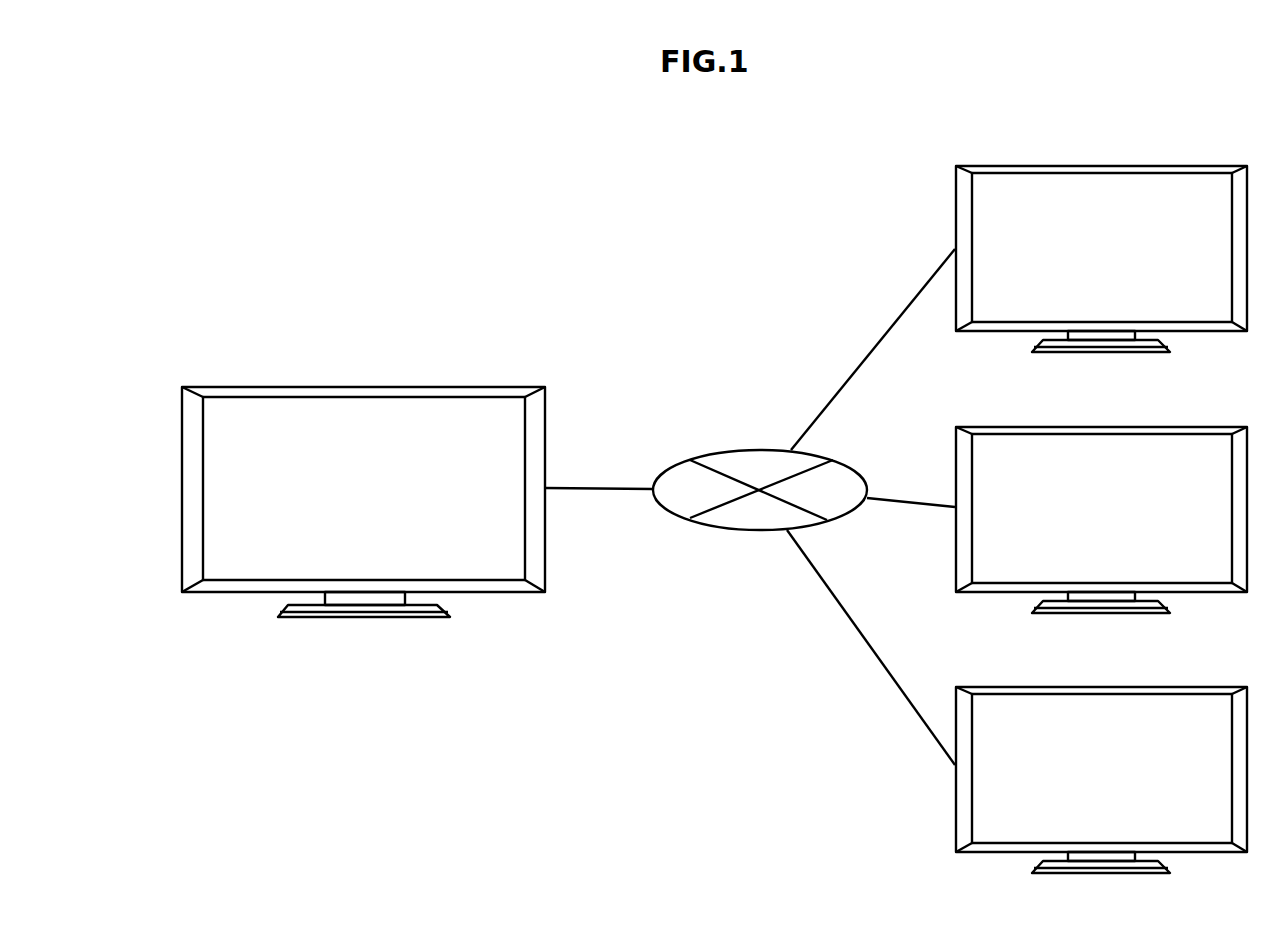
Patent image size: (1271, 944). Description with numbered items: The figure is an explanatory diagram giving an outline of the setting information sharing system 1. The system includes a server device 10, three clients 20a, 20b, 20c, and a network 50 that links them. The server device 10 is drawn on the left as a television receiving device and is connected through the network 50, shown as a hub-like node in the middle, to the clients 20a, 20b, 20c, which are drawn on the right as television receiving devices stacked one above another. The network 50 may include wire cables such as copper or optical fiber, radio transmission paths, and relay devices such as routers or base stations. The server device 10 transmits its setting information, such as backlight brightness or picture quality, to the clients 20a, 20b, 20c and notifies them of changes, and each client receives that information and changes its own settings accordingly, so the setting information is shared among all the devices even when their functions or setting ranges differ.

The setting information sharing system 1 is at (677, 190).
The server device 10 is at (440, 387).
The network 50 is at (737, 450).
The client 20a is at (1197, 166).
The client 20b is at (1197, 427).
The client 20c is at (1197, 687).